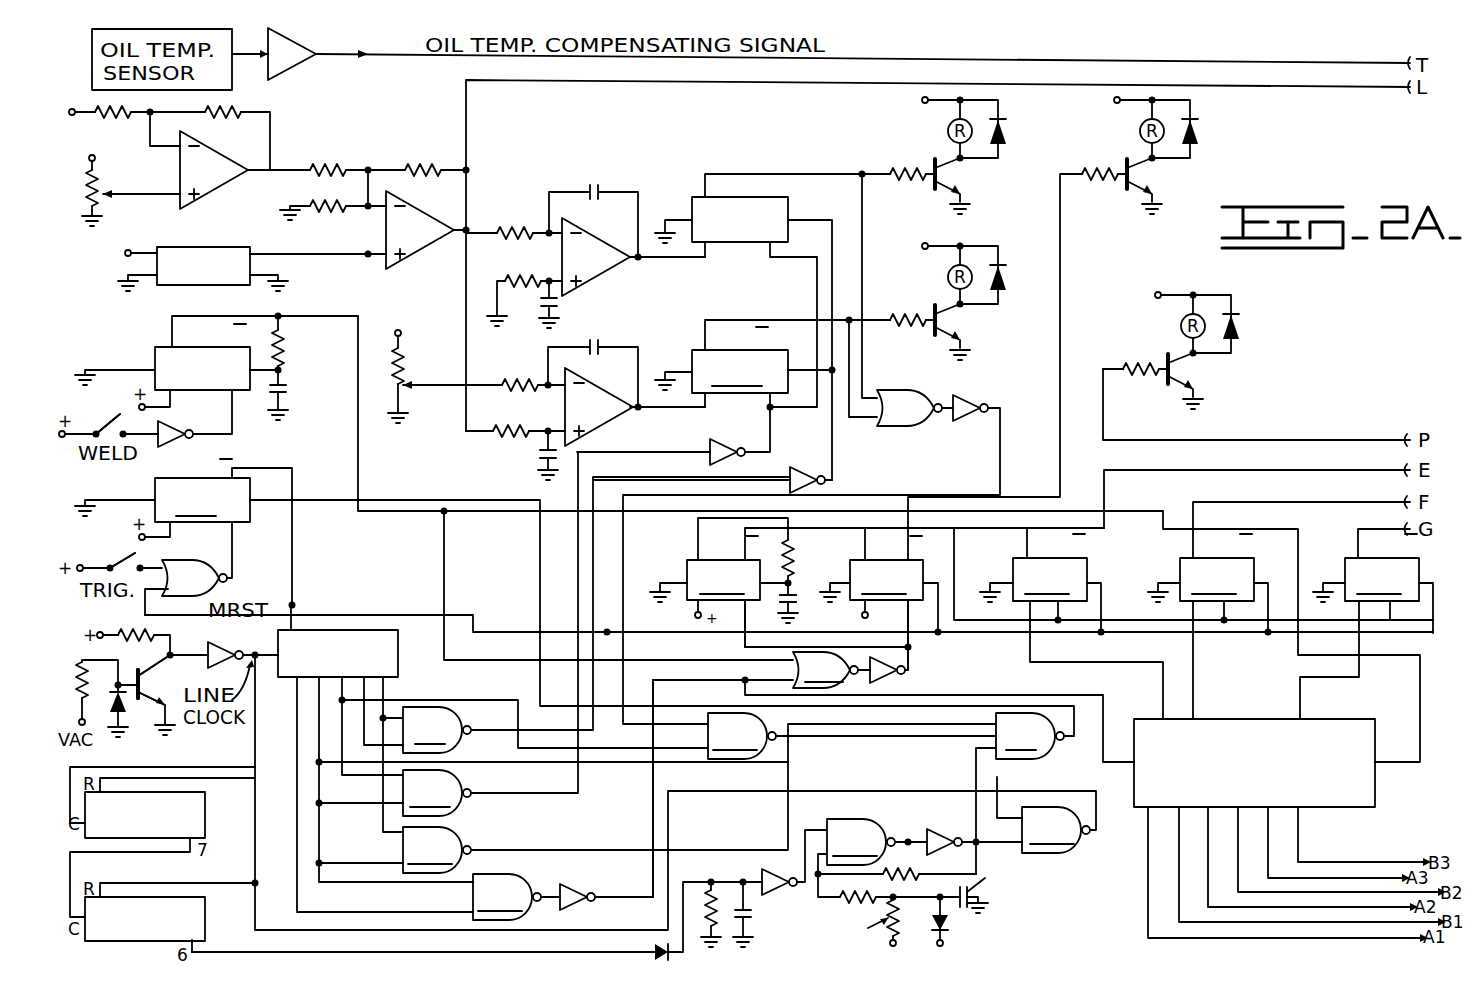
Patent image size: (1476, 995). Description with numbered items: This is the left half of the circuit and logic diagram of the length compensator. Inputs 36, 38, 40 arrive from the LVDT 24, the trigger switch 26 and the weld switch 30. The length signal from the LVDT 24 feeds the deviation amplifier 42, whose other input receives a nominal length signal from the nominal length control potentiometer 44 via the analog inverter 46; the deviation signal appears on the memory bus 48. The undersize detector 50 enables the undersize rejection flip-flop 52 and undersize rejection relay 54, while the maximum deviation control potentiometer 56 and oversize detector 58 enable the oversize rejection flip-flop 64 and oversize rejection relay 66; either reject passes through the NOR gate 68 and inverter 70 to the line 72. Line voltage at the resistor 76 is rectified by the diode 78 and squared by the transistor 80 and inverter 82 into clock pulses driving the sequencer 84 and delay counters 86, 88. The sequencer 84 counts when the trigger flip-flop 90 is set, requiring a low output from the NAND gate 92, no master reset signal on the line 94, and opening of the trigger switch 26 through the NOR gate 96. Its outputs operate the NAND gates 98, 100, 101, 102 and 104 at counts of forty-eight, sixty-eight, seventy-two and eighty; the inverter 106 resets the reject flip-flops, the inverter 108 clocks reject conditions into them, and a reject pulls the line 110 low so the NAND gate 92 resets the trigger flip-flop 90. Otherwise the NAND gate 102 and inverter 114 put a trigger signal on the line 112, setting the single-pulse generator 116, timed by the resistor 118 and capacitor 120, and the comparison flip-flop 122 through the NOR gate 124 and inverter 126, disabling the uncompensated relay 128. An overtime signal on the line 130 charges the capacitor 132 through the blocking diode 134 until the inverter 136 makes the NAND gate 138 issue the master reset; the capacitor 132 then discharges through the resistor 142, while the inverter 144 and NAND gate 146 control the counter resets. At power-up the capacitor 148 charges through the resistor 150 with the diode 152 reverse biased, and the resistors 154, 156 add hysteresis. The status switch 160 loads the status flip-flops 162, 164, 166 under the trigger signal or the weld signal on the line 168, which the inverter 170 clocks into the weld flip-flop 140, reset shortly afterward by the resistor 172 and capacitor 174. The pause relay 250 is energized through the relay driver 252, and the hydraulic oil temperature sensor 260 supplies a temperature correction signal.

The LVDT 24 is at (178, 262).
The trigger switch 26 is at (112, 566).
The weld switch 30 is at (112, 432).
The input from LVDT 36 is at (366, 252).
The input from trigger switch 38 is at (144, 592).
The input from weld switch 40 is at (125, 438).
The deviation amplifier 42 is at (420, 220).
The nominal length control potentiometer 44 is at (90, 198).
The analog inverter 46 is at (215, 163).
The memory bus 48 is at (600, 84).
The undersize detector 50 is at (598, 264).
The undersize rejection flip-flop 52 is at (735, 240).
The undersize rejection relay 54 is at (978, 160).
The maximum deviation control potentiometer 56 is at (412, 376).
The oversize detector 58 is at (606, 418).
The oversize rejection flip-flop 64 is at (739, 370).
The oversize rejection relay 66 is at (980, 264).
The NOR gate 68 is at (922, 397).
The inverter 70 is at (966, 401).
The reject signal line 72 is at (1002, 450).
The resistor 76 is at (80, 690).
The diode 78 is at (126, 725).
The transistor 80 is at (165, 673).
The inverter 82 is at (218, 650).
The sequencer 84 is at (395, 676).
The delay counter 86 is at (205, 808).
The delay counter 88 is at (205, 911).
The trigger flip-flop 90 is at (203, 504).
The NAND gate 92 is at (1030, 736).
The master reset line 94 is at (355, 614).
The NOR gate 96 is at (180, 576).
The NAND gate 98 is at (437, 730).
The NAND gate 100 is at (742, 736).
The NAND gate 101 is at (437, 793).
The NAND gate 102 is at (507, 897).
The NAND gate 104 is at (437, 850).
The inverter 106 is at (805, 470).
The inverter 108 is at (722, 446).
The line 110 is at (858, 736).
The trigger signal line 112 is at (653, 841).
The inverter 114 is at (586, 900).
The single-pulse generator 116 is at (723, 580).
The resistor 118 is at (796, 540).
The capacitor 120 is at (795, 606).
The comparison flip-flop 122 is at (886, 580).
The NOR gate 124 is at (825, 670).
The inverter 126 is at (892, 668).
The uncompensated relay 128 is at (1172, 158).
The overtime signal line 130 is at (416, 962).
The capacitor 132 is at (752, 906).
The blocking diode 134 is at (652, 948).
The inverter 136 is at (770, 866).
The NAND gate 138 is at (861, 842).
The weld flip-flop 140 is at (168, 347).
The resistor 142 is at (696, 897).
The inverter 144 is at (946, 838).
The NAND gate 146 is at (1056, 830).
The capacitor 148 is at (978, 889).
The resistor 150 is at (880, 932).
The diode 152 is at (950, 926).
The resistor 154 is at (850, 902).
The resistor 156 is at (905, 863).
The status switch 160 is at (1362, 805).
The status flip-flop 162 is at (1049, 579).
The status flip-flop 164 is at (1216, 579).
The status flip-flop 166 is at (1381, 579).
The weld signal line 168 is at (360, 470).
The inverter 170 is at (166, 440).
The resistor 172 is at (286, 350).
The capacitor 174 is at (286, 392).
The pause relay 250 is at (1208, 310).
The relay driver 252 is at (1180, 374).
The hydraulic oil temperature sensor 260 is at (232, 82).